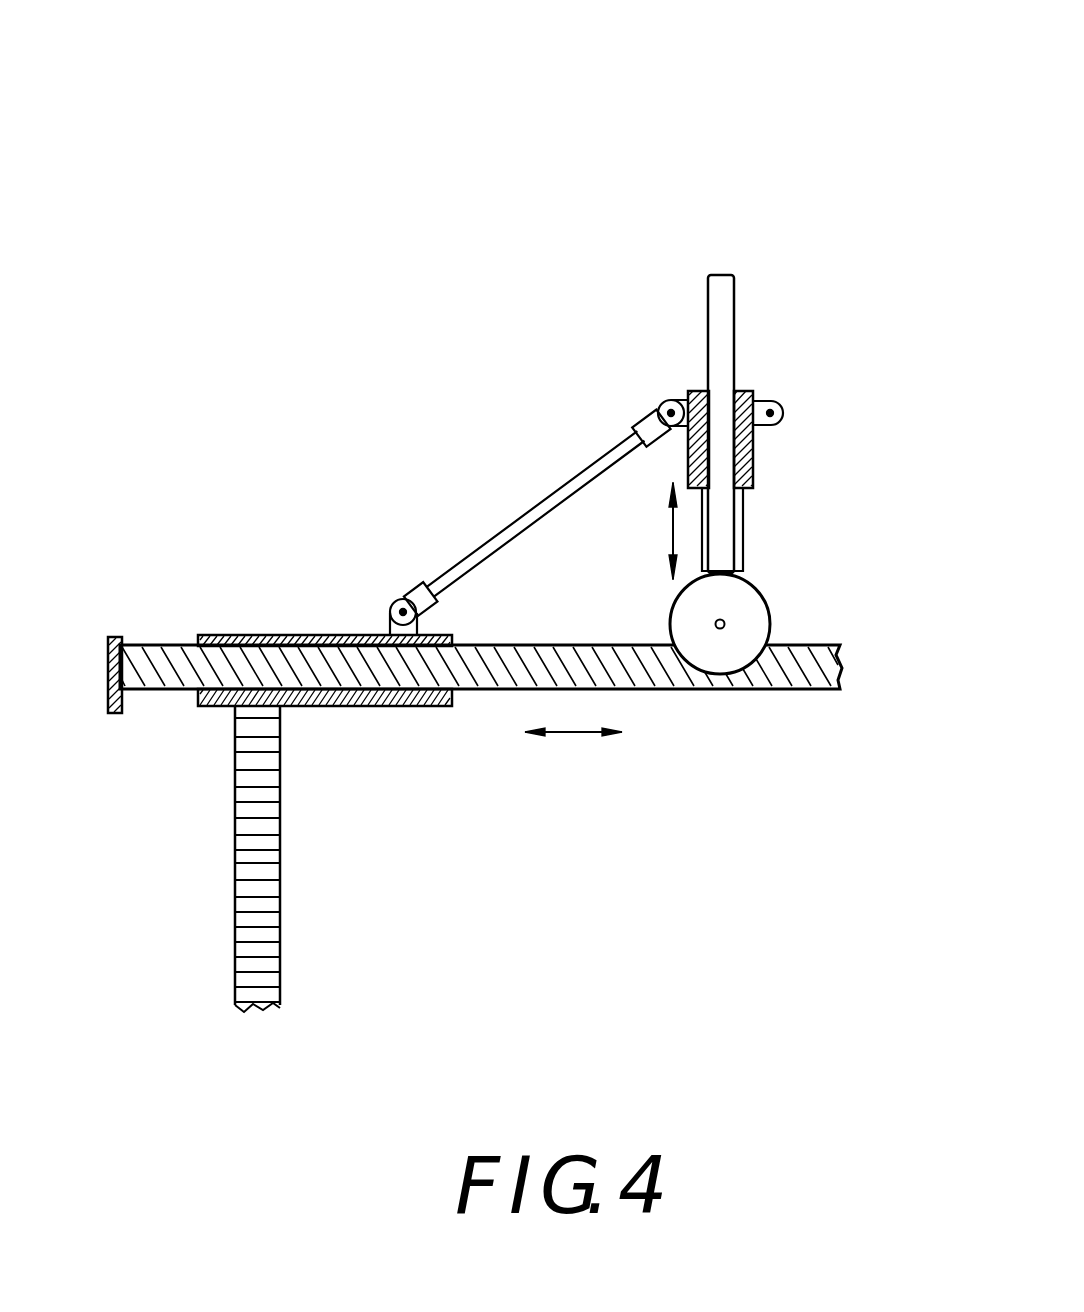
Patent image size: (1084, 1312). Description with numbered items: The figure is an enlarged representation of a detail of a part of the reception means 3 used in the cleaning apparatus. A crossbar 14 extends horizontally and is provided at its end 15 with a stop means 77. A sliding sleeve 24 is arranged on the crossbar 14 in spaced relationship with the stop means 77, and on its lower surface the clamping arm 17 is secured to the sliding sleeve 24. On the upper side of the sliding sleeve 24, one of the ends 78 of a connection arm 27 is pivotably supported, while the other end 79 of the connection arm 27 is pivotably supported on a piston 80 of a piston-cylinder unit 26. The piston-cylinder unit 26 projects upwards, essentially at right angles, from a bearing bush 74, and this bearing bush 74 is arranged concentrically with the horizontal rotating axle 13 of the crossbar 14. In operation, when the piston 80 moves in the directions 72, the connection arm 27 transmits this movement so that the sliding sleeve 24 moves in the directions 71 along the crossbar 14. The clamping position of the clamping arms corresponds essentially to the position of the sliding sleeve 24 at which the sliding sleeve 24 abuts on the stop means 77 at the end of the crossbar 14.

The reception means 3 is at (588, 392).
The horizontal rotating axle 13 is at (721, 629).
The crossbar 14 is at (806, 668).
The end of the crossbar 15 is at (161, 610).
The clamping arm 17 is at (237, 776).
The sliding sleeve 24 is at (288, 636).
The piston-cylinder unit 26 is at (723, 238).
The connection arm 27 is at (526, 513).
The directions of sliding sleeve movement 71 is at (573, 733).
The directions of piston movement 72 is at (672, 533).
The bearing bush 74 is at (748, 604).
The stop means 77 is at (116, 637).
The end of the connection arm 78 is at (379, 560).
The other end of the connection arm 79 is at (664, 350).
The piston 80 is at (754, 455).